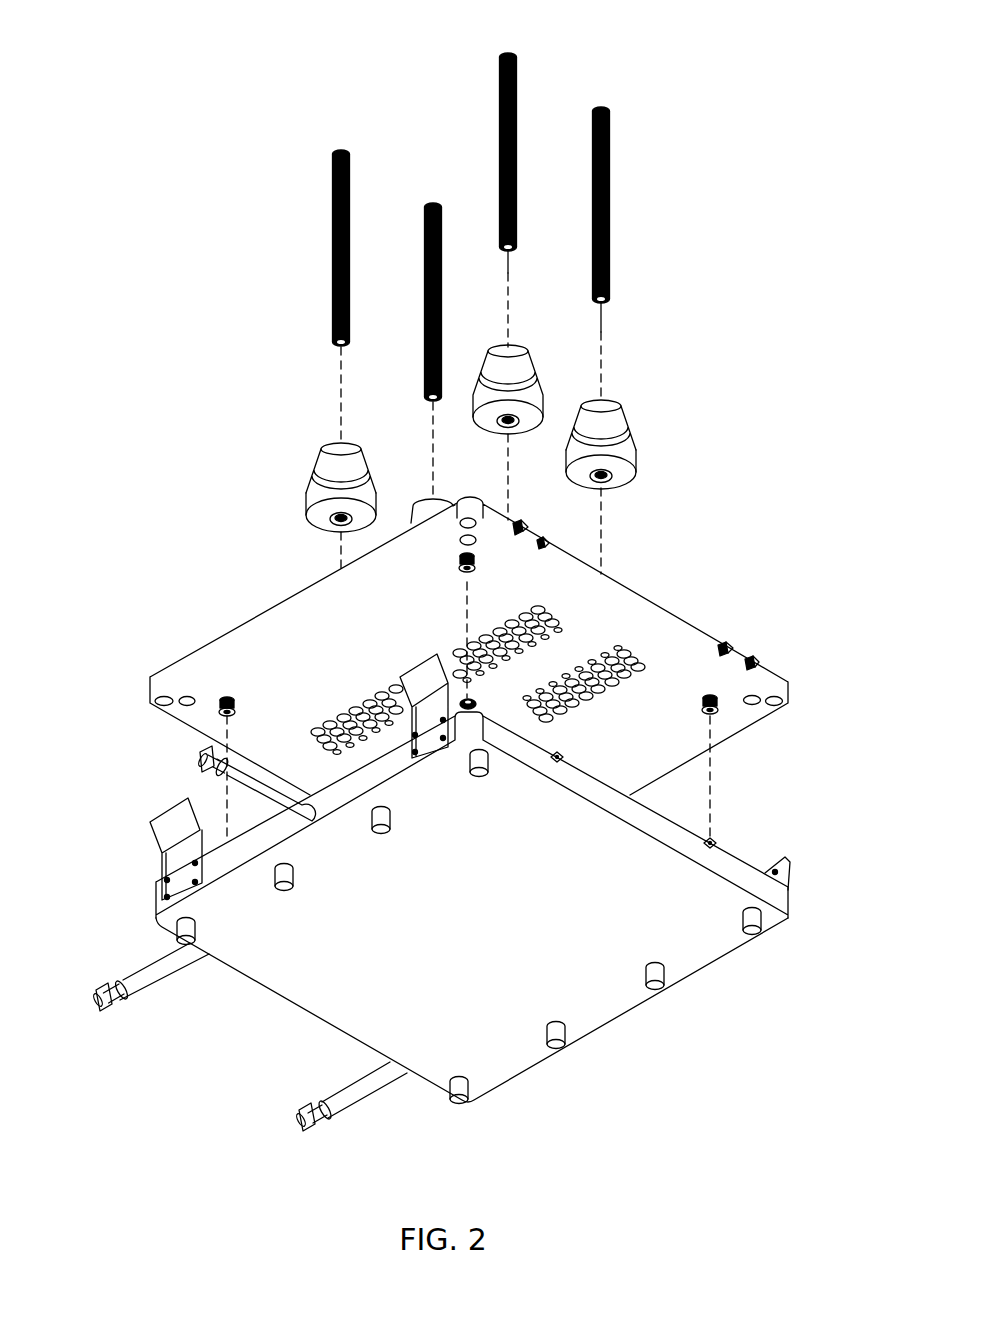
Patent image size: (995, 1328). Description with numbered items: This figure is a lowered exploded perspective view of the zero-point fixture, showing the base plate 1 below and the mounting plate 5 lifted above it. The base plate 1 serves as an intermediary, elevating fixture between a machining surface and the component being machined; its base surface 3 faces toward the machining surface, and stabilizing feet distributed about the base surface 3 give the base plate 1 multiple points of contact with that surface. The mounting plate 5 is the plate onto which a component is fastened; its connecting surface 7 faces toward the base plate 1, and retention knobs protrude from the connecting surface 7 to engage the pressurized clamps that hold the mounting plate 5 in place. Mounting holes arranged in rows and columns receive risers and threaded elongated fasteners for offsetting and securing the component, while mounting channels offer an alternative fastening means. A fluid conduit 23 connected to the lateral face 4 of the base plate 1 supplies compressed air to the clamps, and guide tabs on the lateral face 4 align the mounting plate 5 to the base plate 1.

The base plate 1 is at (460, 803).
The base surface 3 is at (506, 915).
The lateral face 4 is at (460, 856).
The mounting plate 5 is at (469, 648).
The connecting surface 7 is at (380, 650).
The fluid conduit 23 is at (205, 764).